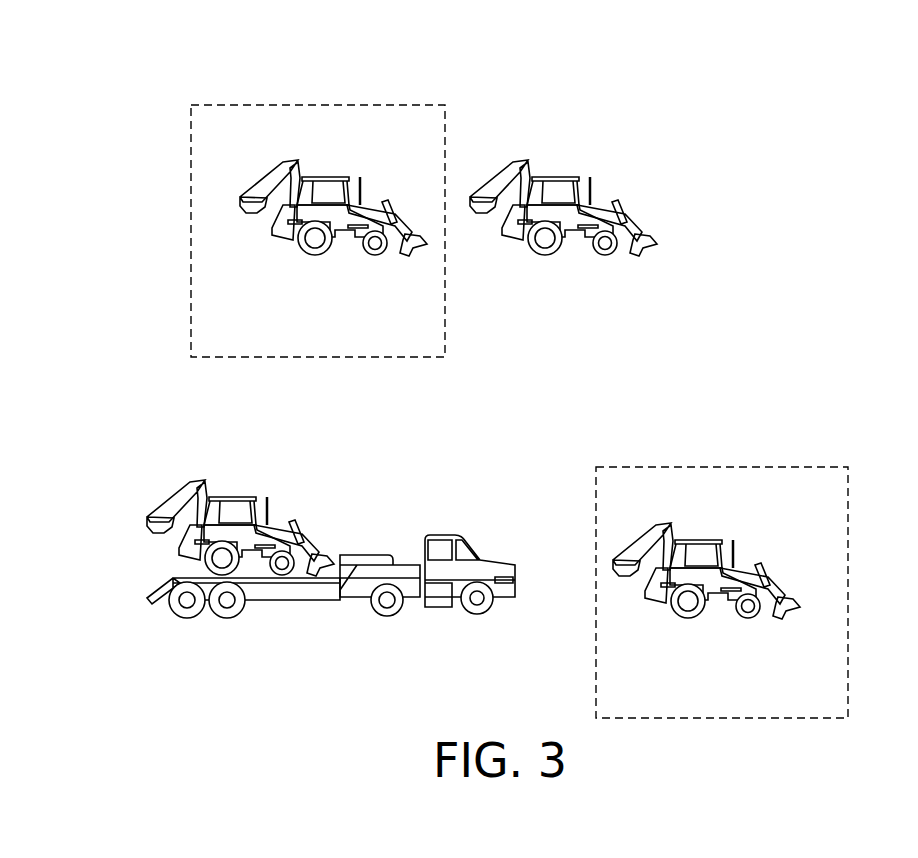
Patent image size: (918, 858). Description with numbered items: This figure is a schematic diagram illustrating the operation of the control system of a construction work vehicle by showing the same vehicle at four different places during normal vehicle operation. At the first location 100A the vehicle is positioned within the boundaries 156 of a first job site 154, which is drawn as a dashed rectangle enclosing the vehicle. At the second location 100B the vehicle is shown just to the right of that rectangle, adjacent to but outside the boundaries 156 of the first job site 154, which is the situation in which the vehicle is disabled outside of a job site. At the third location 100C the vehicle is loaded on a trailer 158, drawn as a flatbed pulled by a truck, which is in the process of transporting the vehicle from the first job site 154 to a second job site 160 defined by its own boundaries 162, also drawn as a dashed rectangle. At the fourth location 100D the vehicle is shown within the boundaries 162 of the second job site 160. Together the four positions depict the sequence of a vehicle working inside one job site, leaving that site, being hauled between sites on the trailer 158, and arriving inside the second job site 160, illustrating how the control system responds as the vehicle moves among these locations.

The first job site 154 is at (153, 83).
The boundaries 156 is at (315, 103).
The first location 100A is at (335, 175).
The second location 100B is at (575, 243).
The third location 100C is at (318, 497).
The fourth location 100D is at (683, 617).
The trailer 158 is at (163, 500).
The second job site 160 is at (812, 422).
The boundaries 162 is at (725, 466).